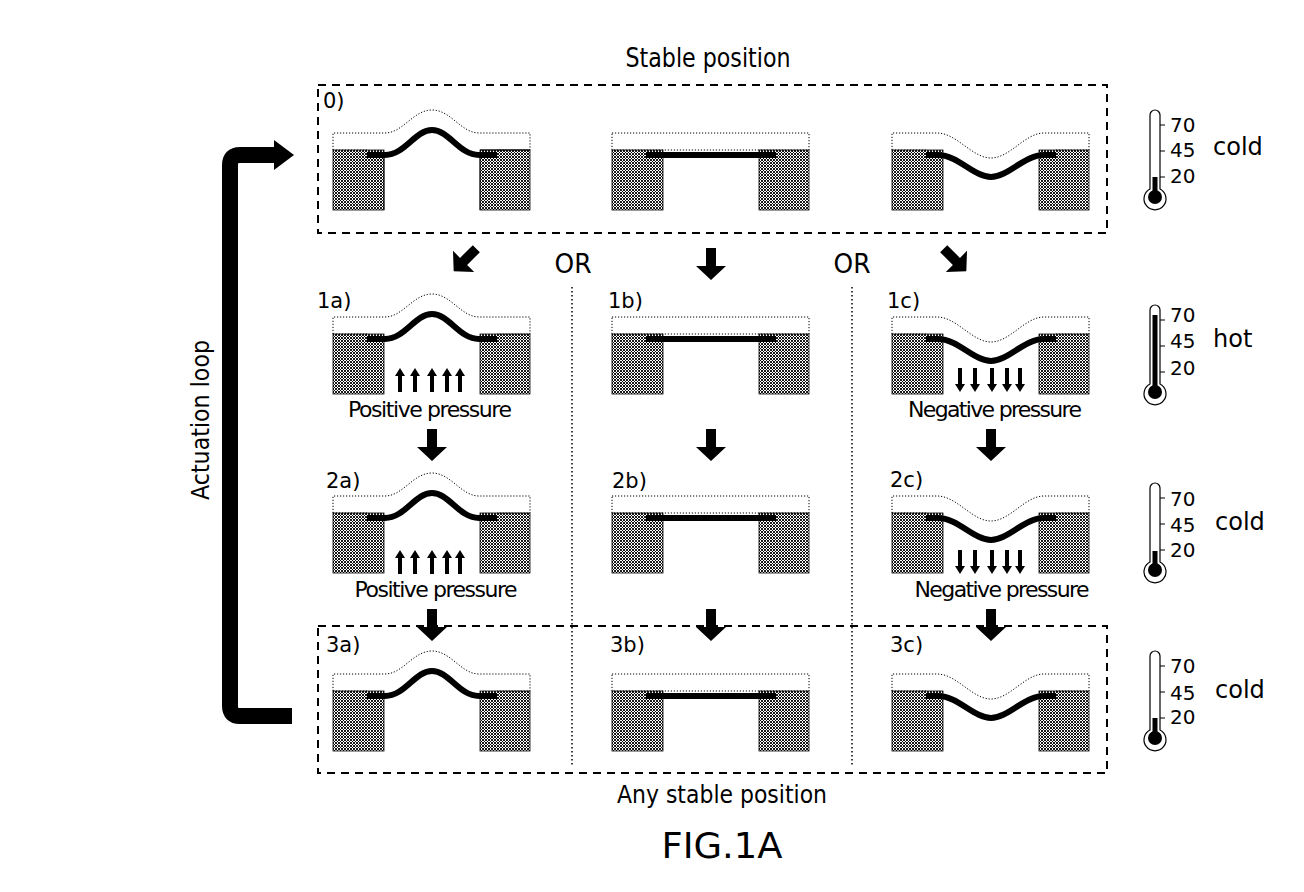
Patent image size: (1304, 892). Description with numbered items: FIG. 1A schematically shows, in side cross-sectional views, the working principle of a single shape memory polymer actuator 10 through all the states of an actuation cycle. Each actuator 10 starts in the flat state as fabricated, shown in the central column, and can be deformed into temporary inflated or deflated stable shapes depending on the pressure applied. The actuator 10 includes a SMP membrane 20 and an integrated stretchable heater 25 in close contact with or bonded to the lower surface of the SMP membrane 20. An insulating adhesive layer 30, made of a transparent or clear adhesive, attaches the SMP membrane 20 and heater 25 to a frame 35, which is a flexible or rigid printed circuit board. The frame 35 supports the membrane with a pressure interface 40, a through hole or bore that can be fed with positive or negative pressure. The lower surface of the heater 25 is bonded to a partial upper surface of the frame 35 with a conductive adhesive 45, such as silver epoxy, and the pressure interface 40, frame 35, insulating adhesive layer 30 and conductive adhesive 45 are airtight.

The actuator 10 is at (1082, 117).
The SMP membrane 20 is at (518, 140).
The integrated stretchable heater 25 is at (448, 130).
The insulating adhesive layer 30 is at (530, 153).
The frame 35 is at (515, 177).
The pressure interface 40 is at (422, 197).
The conductive adhesive 45 is at (385, 158).